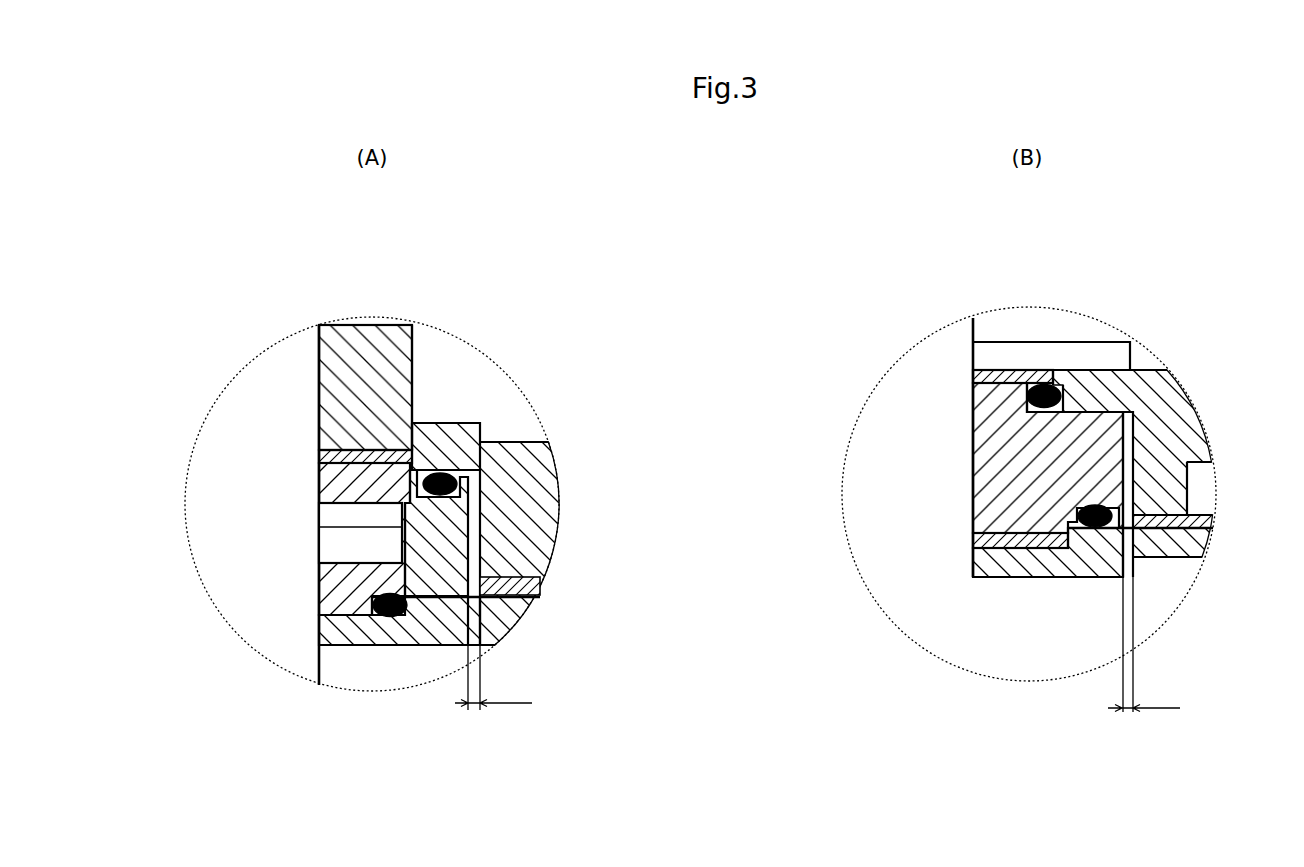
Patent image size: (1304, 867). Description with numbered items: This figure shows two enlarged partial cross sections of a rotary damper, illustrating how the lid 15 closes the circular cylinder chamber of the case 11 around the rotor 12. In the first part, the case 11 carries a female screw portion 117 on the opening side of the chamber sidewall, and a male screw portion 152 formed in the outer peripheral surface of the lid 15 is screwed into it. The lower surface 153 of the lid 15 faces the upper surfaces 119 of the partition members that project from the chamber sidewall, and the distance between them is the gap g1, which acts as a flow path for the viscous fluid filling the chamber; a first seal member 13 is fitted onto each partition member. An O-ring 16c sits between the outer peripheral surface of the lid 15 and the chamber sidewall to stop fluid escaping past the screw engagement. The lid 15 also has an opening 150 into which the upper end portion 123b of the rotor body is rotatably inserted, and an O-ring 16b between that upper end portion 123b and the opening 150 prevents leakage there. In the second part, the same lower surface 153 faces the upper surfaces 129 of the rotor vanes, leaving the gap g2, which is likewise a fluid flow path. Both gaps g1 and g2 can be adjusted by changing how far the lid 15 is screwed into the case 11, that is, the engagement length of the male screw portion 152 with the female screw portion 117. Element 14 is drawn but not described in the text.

The case 11 is at (514, 442).
The rotor 12 is at (406, 646).
The first seal member 13 is at (514, 577).
The support portion 14 is at (1212, 516).
The lid 15 is at (318, 487).
The O-ring 16b is at (388, 617).
The O-ring 16c is at (452, 476).
The female screw portion 117 is at (414, 430).
The upper surface of partition member 119 is at (479, 534).
The upper end portion of rotor body 123b is at (319, 637).
The upper surface of vane 129 is at (1137, 486).
The opening 150 is at (310, 614).
The male screw portion 152 is at (362, 447).
The lower surface of lid 153 is at (482, 512).
The gap g1 is at (493, 677).
The gap g2 is at (1144, 699).